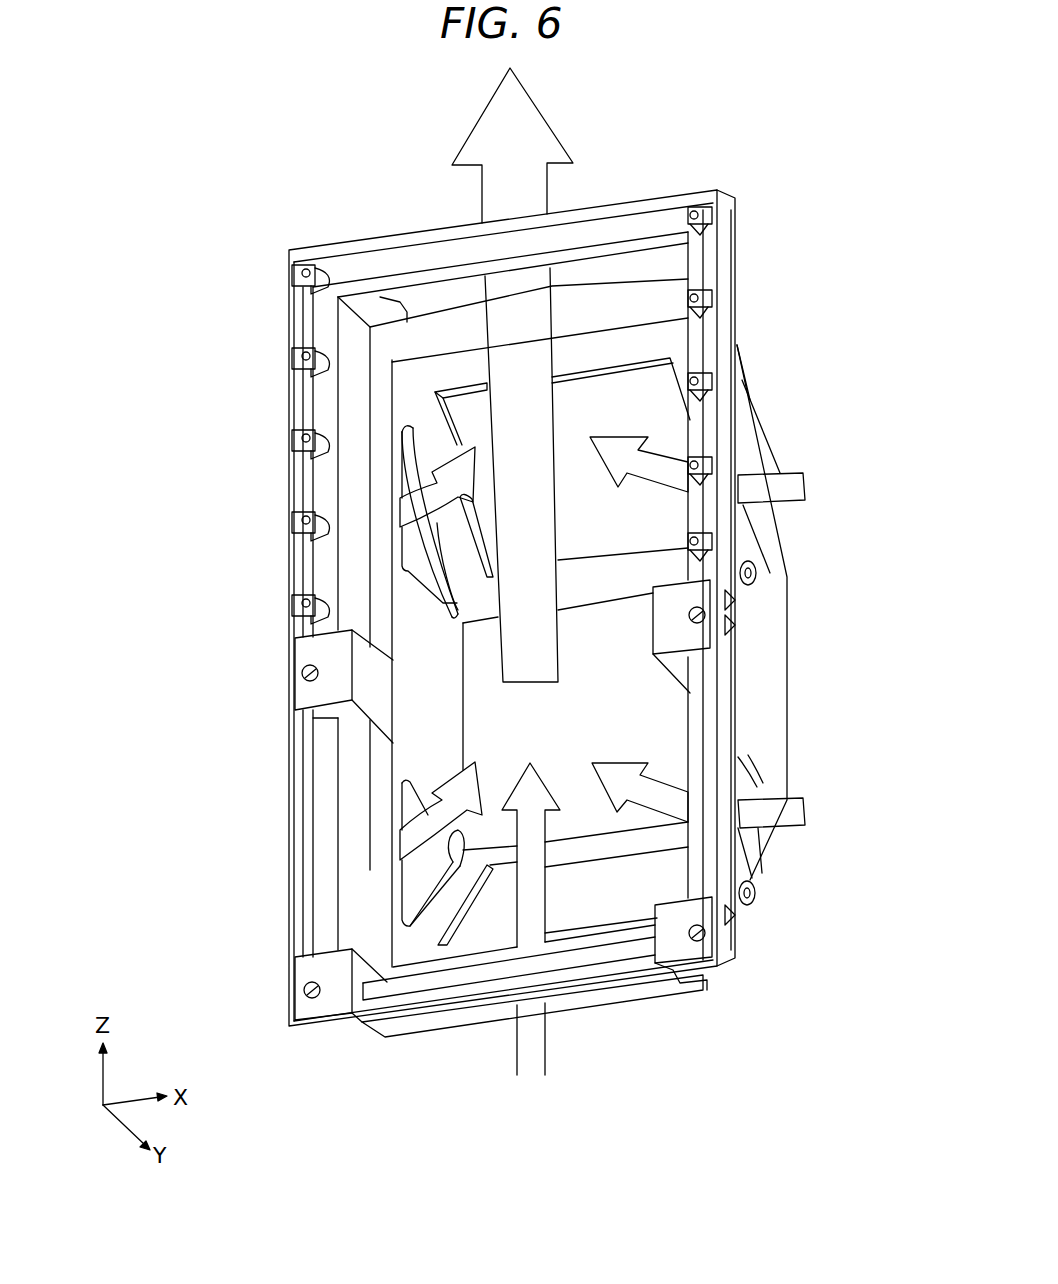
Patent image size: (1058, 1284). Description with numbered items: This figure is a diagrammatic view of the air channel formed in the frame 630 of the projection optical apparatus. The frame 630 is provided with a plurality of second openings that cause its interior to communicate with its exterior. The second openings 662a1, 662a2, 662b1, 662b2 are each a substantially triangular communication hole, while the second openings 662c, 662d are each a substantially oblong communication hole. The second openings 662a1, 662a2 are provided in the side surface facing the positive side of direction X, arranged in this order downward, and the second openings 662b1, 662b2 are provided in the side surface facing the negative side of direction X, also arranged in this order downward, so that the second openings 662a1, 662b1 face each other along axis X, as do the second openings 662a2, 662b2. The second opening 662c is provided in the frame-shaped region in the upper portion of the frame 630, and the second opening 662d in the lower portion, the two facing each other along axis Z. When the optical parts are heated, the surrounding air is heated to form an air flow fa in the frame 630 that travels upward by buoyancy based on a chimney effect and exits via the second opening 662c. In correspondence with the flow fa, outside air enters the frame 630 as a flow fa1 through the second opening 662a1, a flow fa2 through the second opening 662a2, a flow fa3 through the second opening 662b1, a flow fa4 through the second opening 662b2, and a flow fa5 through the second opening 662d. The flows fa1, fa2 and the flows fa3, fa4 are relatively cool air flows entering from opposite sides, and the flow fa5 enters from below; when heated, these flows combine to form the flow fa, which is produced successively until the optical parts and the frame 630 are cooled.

The frame 630 is at (836, 111).
The second opening 662c is at (640, 266).
The second opening 662d is at (645, 993).
The second opening 662a1 is at (757, 535).
The second opening 662a2 is at (747, 777).
The second opening 662b1 is at (402, 569).
The second opening 662b2 is at (405, 905).
The air flow fa is at (492, 122).
The flow fa1 is at (780, 480).
The flow fa2 is at (792, 828).
The flow fa3 is at (425, 497).
The flow fa4 is at (417, 820).
The flow fa5 is at (530, 1062).